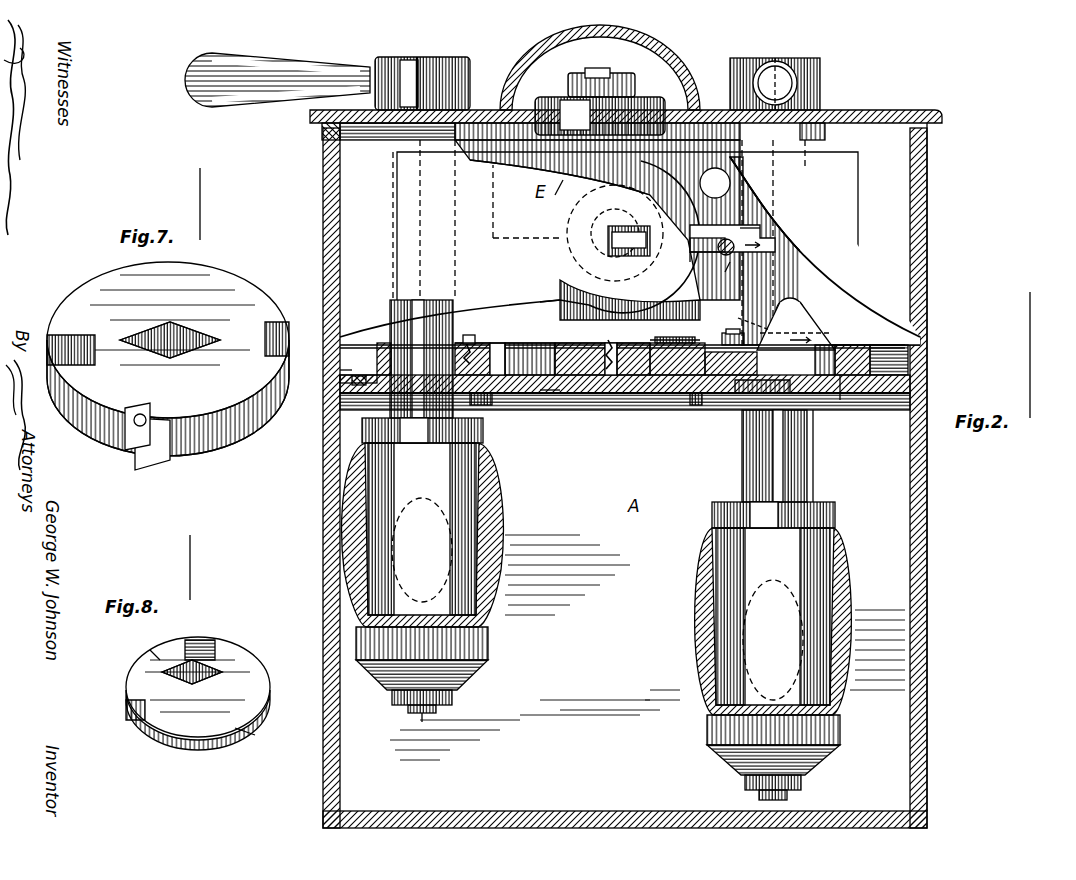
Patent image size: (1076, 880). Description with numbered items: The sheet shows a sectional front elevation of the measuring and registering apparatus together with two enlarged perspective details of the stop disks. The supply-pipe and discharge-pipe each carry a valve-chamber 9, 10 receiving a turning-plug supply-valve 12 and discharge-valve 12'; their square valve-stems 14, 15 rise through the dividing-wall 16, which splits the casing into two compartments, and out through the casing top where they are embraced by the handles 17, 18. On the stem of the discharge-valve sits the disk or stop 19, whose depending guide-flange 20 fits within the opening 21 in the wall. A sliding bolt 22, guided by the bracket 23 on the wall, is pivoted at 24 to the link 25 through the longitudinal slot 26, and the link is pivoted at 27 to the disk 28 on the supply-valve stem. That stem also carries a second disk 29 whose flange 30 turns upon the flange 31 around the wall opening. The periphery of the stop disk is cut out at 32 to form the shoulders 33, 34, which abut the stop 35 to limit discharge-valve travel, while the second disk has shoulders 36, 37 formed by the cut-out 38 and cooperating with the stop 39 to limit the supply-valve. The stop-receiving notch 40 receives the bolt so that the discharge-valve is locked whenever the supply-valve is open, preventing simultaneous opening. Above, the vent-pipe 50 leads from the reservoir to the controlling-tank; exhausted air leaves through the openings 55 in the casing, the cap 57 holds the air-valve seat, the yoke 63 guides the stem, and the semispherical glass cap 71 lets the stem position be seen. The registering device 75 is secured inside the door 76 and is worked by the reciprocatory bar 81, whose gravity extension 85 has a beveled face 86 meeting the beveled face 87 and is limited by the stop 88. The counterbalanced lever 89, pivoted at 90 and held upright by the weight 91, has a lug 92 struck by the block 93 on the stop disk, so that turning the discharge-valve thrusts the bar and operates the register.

In FIG. 2, the valve-chamber 9 is at (503, 518).
In FIG. 2, the valve-chamber 10 is at (695, 650).
In FIG. 2, the supply-valve 12 is at (449, 445).
In FIG. 2, the discharge-valve 12' is at (742, 531).
In FIG. 2, the valve-stem 14 is at (455, 312).
In FIG. 2, the valve-stem 15 is at (782, 182).
In FIG. 2, the dividing-wall 16 is at (622, 410).
In FIG. 2, the handle 17 is at (265, 88).
In FIG. 2, the handle 18 is at (780, 66).
In FIG. 2, the disk or stop 19 is at (845, 345).
In FIG. 7, the disk or stop 19 is at (230, 310).
In FIG. 2, the guide-flange 20 is at (808, 470).
In FIG. 2, the opening 21 is at (845, 402).
In FIG. 2, the sliding bolt 22 is at (688, 400).
In FIG. 2, the bracket 23 is at (556, 392).
In FIG. 2, the pivot 24 is at (660, 343).
In FIG. 2, the link 25 is at (518, 343).
In FIG. 2, the longitudinal slot 26 is at (575, 343).
In FIG. 2, the pivot 27 is at (475, 338).
In FIG. 2, the disk 28 is at (380, 340).
In FIG. 2, the disk 29 is at (368, 375).
In FIG. 8, the disk 29 is at (245, 672).
In FIG. 2, the flange 30 is at (482, 408).
In FIG. 8, the flange 30 is at (250, 742).
In FIG. 2, the flange 31 is at (355, 385).
In FIG. 7, the cut-out 32 is at (225, 425).
In FIG. 7, the shoulder 33 is at (172, 460).
In FIG. 2, the shoulder 34 is at (878, 345).
In FIG. 7, the shoulder 34 is at (278, 356).
In FIG. 2, the stop 35 is at (905, 360).
In FIG. 8, the shoulder 36 is at (130, 705).
In FIG. 8, the shoulder 37 is at (205, 645).
In FIG. 8, the cut-out 38 is at (165, 655).
In FIG. 2, the stop 39 is at (345, 376).
In FIG. 2, the stop-receiving notch 40 is at (668, 330).
In FIG. 7, the stop-receiving notch 40 is at (96, 350).
In FIG. 2, the vent-pipe 50 is at (548, 300).
In FIG. 2, the openings 55 is at (730, 186).
In FIG. 2, the cap 57 is at (648, 98).
In FIG. 2, the yoke 63 is at (620, 75).
In FIG. 2, the glass cap 71 is at (700, 78).
In FIG. 2, the registering device 75 is at (635, 222).
In FIG. 2, the door 76 is at (464, 251).
In FIG. 2, the reciprocatory bar 81 is at (702, 265).
In FIG. 2, the gravity extension 85 is at (775, 243).
In FIG. 2, the beveled face 86 is at (745, 225).
In FIG. 2, the beveled face 87 is at (726, 260).
In FIG. 2, the stop 88 is at (726, 240).
In FIG. 2, the counterbalanced lever 89 is at (800, 308).
In FIG. 2, the pivot 90 is at (808, 316).
In FIG. 2, the weight 91 is at (740, 395).
In FIG. 2, the lug 92 is at (741, 313).
In FIG. 2, the block 93 is at (720, 340).
In FIG. 7, the block 93 is at (130, 408).